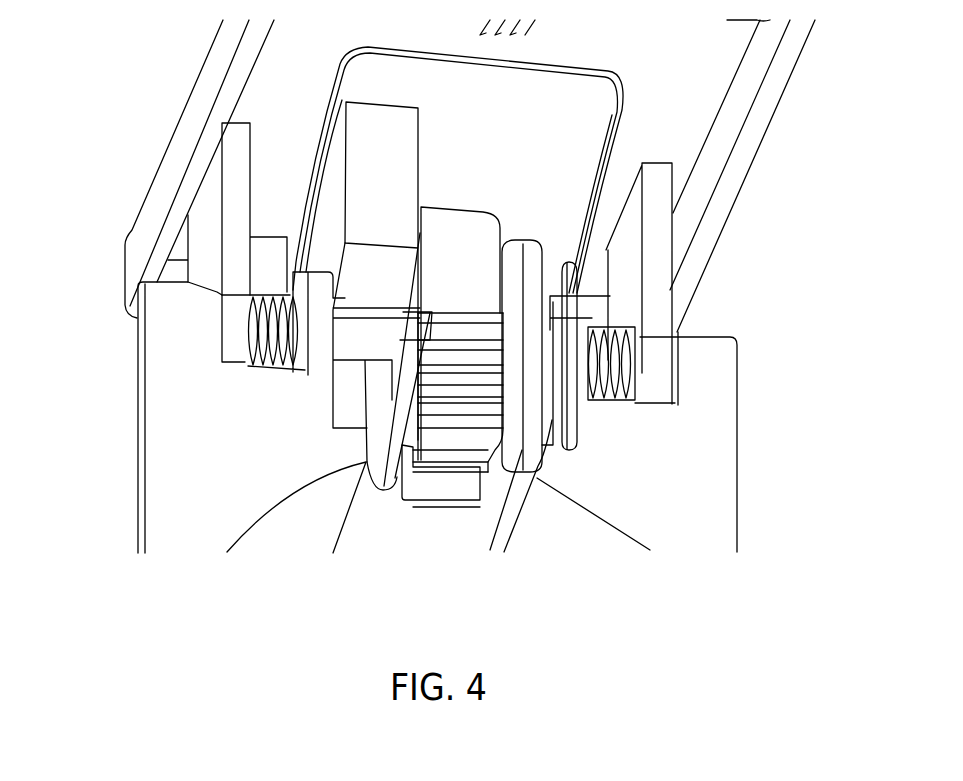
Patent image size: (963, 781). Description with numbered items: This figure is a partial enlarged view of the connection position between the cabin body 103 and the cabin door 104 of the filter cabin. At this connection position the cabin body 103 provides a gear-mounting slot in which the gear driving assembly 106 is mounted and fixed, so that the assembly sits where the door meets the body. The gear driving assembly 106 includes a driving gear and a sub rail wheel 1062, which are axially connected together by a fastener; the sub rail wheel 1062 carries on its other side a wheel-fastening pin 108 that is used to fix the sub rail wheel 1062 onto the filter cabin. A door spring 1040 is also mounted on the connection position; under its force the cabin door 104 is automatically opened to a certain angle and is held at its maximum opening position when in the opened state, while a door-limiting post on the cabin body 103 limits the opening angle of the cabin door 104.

The cabin body 103 is at (153, 438).
The cabin door 104 is at (677, 117).
The door spring 1040 is at (622, 370).
The gear driving assembly 106 is at (432, 488).
The sub rail wheel 1062 is at (520, 478).
The wheel-fastening pin 108 is at (547, 430).